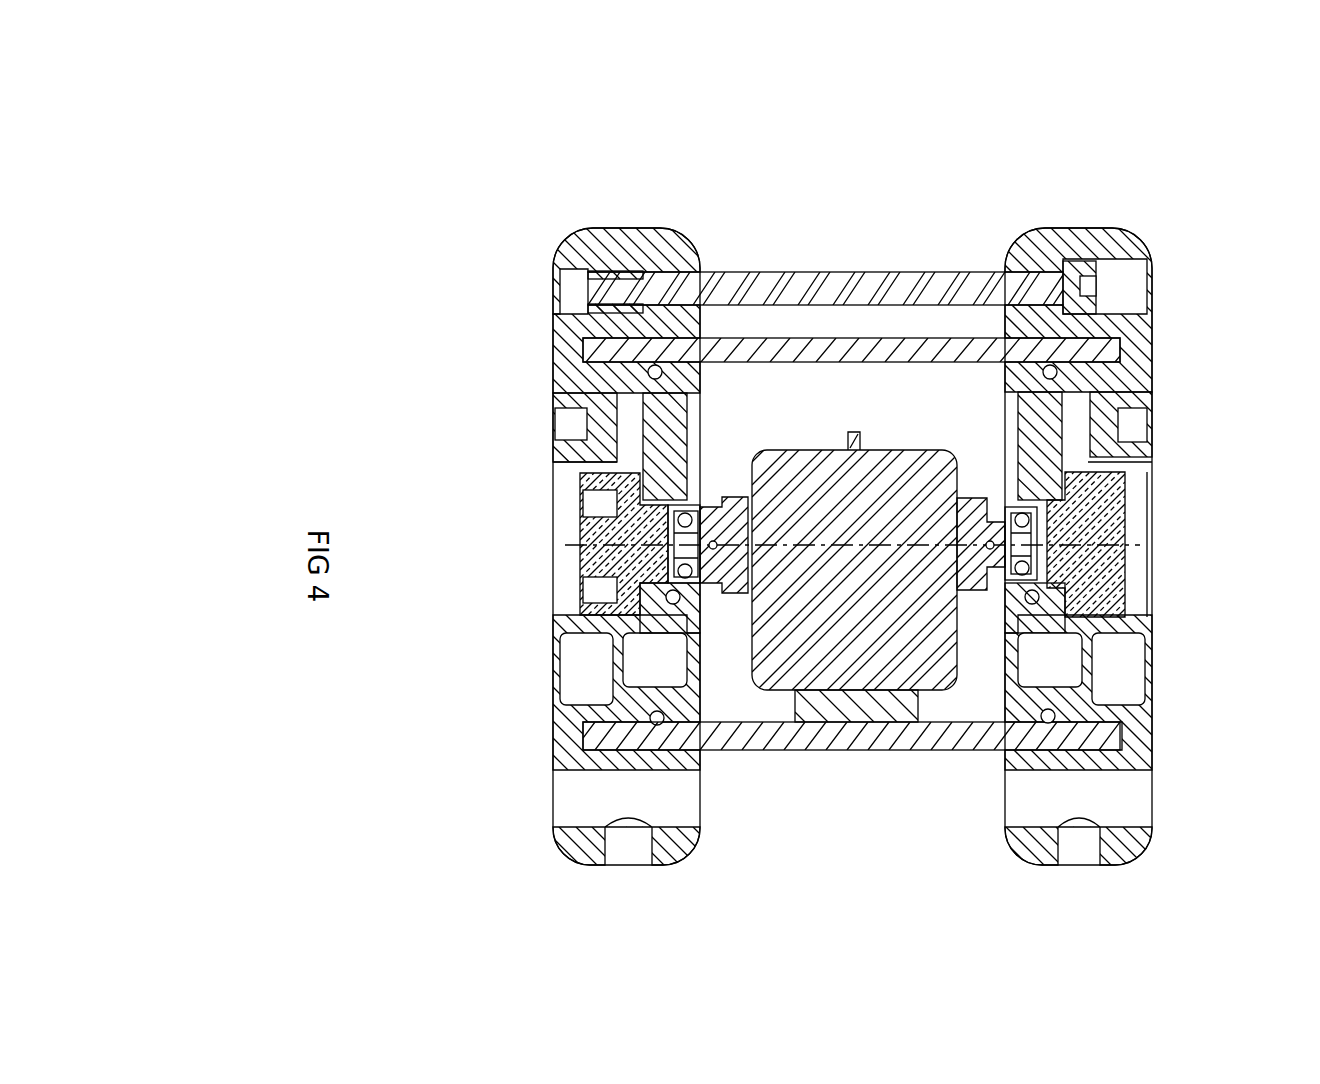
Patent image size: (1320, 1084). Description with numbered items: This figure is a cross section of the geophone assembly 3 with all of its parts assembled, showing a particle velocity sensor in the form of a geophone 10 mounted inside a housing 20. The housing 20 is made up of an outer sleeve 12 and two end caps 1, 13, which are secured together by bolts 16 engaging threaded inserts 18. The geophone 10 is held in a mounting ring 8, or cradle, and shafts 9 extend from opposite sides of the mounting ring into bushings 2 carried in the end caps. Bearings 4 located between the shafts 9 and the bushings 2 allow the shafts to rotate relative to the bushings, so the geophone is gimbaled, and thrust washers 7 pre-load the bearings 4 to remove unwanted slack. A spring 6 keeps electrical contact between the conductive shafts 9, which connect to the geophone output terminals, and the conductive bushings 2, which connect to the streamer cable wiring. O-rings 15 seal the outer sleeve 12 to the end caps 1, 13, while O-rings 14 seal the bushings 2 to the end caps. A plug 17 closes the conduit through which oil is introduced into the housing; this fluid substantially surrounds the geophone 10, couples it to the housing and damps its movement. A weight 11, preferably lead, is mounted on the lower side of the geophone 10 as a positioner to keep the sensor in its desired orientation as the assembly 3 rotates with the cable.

The end cap 1 is at (1113, 224).
The bushing 2 is at (1125, 517).
The geophone assembly 3 is at (400, 224).
The bearing 4 is at (1133, 617).
The spring 6 is at (662, 545).
The thrust washer 7 is at (670, 528).
The mounting ring 8 is at (977, 595).
The shaft 9 is at (717, 582).
The geophone 10 is at (767, 607).
The weight 11 is at (858, 722).
The outer sleeve 12 is at (762, 330).
The end cap 13 is at (652, 224).
The O-ring 14 is at (670, 598).
The O-ring 15 is at (650, 332).
The bolt 16 is at (848, 275).
The plug 17 is at (1153, 427).
The threaded insert 18 is at (643, 274).
The housing 20 is at (577, 224).